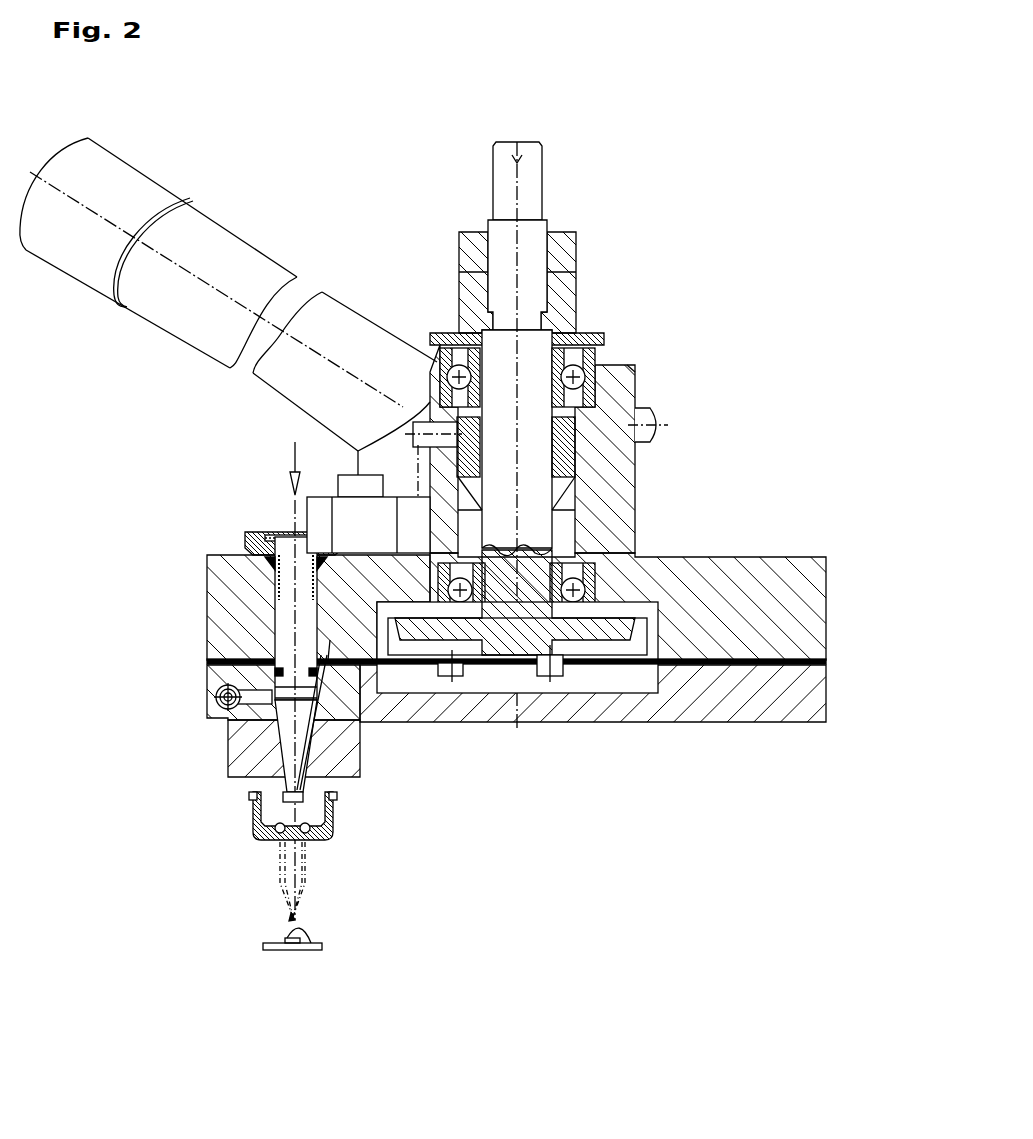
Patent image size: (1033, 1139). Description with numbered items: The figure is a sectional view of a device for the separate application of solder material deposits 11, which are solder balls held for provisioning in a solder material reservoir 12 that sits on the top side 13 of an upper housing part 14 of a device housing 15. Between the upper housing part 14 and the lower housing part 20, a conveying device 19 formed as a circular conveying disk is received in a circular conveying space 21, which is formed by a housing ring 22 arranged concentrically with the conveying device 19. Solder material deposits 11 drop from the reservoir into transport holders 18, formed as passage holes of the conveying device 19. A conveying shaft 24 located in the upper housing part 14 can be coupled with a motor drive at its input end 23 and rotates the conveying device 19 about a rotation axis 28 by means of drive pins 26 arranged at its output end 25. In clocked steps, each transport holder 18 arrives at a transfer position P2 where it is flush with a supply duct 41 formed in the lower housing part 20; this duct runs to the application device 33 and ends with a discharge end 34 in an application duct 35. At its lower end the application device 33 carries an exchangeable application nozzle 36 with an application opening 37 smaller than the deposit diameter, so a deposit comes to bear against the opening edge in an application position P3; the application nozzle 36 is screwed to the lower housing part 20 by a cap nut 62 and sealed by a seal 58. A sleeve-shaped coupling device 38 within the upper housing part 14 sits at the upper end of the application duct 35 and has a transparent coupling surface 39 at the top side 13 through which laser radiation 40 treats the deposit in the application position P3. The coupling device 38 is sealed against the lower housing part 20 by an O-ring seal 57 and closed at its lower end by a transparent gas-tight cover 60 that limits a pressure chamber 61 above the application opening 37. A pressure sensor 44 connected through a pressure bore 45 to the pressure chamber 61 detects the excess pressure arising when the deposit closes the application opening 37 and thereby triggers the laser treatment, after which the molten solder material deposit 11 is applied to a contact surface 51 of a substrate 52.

The solder material deposits 11 is at (297, 915).
The solder material reservoir 12 is at (200, 354).
The top side 13 is at (755, 557).
The upper housing part 14 is at (790, 600).
The device housing 15 is at (815, 543).
The transport holders 18 is at (328, 660).
The conveying device 19 is at (720, 667).
The lower housing part 20 is at (800, 700).
The circular conveying space 21 is at (650, 680).
The housing ring 22 is at (790, 660).
The input end 23 is at (505, 153).
The conveying shaft 24 is at (470, 218).
The output end 25 is at (517, 645).
The drive pins 26 is at (452, 660).
The rotation axis 28 is at (520, 162).
The application device 33 is at (290, 808).
The discharge end 34 is at (333, 800).
The application duct 35 is at (255, 800).
The application nozzle 36 is at (287, 918).
The application opening 37 is at (263, 948).
The coupling device 38 is at (292, 581).
The coupling surface 39 is at (290, 540).
The laser radiation 40 is at (293, 453).
The supply duct 41 is at (345, 775).
The pressure sensor 44 is at (228, 697).
The pressure bore 45 is at (288, 740).
The contact surface 51 is at (310, 950).
The substrate 52 is at (318, 950).
The seal 57 is at (275, 672).
The seal 58 is at (320, 840).
The cover 60 is at (285, 683).
The pressure chamber 61 is at (272, 832).
The cap nut 62 is at (283, 883).
The transfer position P2 is at (300, 640).
The application position P3 is at (313, 927).